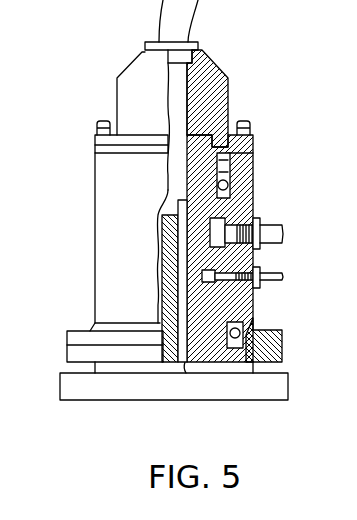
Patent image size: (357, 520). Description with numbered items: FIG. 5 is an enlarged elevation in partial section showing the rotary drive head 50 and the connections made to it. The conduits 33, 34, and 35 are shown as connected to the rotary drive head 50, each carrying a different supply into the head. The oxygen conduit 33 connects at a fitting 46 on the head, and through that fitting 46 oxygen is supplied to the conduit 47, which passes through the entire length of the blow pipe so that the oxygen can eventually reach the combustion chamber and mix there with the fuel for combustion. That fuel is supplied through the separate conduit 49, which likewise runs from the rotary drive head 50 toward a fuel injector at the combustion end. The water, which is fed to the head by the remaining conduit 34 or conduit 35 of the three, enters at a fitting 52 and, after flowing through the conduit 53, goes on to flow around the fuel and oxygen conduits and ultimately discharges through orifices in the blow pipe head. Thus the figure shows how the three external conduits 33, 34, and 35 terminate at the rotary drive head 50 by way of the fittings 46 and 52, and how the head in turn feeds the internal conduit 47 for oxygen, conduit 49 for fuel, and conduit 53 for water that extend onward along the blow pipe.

The oxygen conduit 33 is at (190, 22).
The fitting 46 is at (203, 52).
The conduit 47 is at (205, 108).
The fitting 52 is at (250, 196).
The conduit 35 is at (282, 243).
The conduit 34 is at (282, 280).
The conduit 49 is at (236, 314).
The rotary drive head 50 is at (103, 225).
The conduit 53 is at (174, 386).